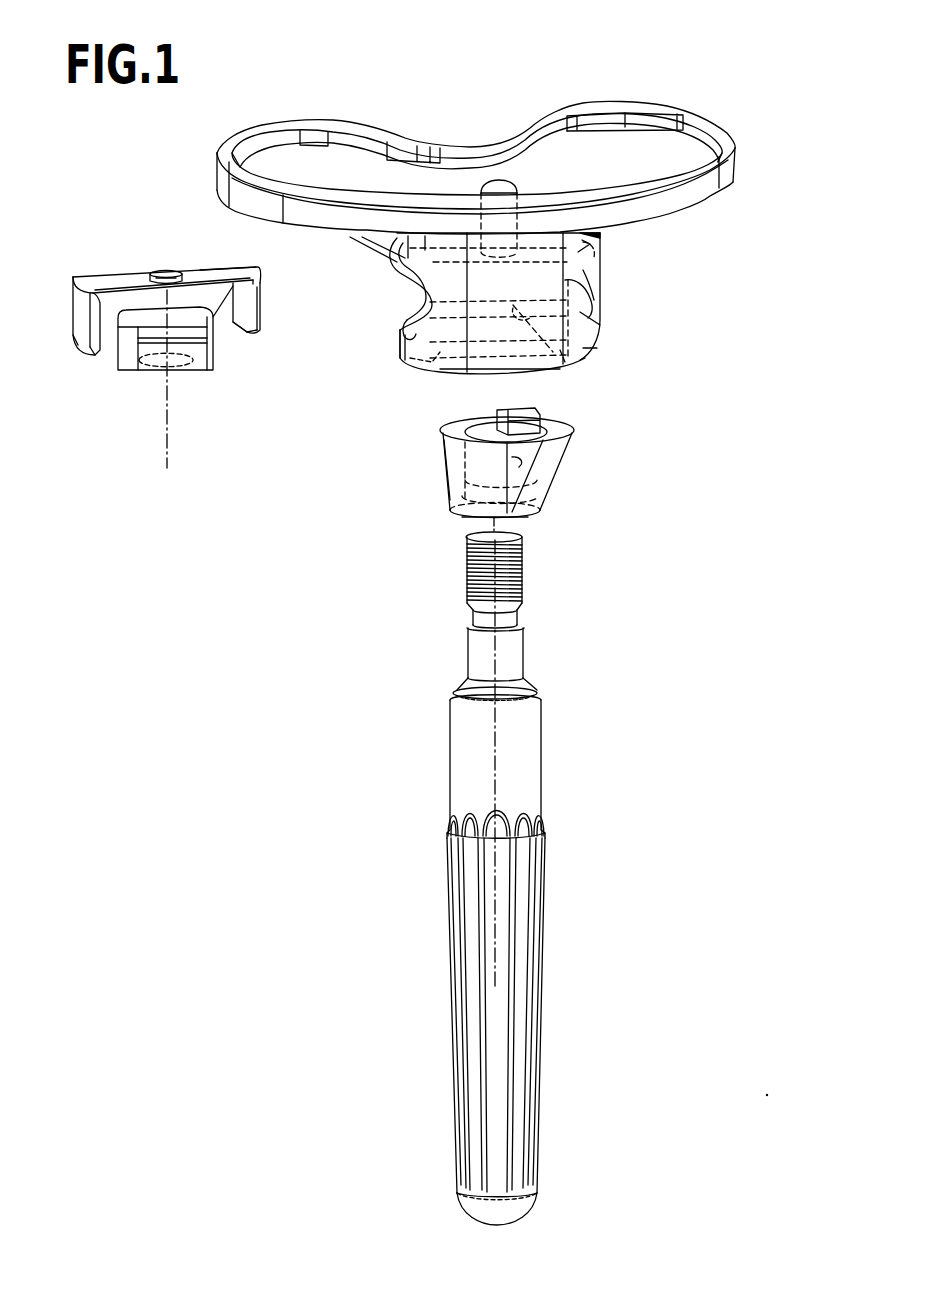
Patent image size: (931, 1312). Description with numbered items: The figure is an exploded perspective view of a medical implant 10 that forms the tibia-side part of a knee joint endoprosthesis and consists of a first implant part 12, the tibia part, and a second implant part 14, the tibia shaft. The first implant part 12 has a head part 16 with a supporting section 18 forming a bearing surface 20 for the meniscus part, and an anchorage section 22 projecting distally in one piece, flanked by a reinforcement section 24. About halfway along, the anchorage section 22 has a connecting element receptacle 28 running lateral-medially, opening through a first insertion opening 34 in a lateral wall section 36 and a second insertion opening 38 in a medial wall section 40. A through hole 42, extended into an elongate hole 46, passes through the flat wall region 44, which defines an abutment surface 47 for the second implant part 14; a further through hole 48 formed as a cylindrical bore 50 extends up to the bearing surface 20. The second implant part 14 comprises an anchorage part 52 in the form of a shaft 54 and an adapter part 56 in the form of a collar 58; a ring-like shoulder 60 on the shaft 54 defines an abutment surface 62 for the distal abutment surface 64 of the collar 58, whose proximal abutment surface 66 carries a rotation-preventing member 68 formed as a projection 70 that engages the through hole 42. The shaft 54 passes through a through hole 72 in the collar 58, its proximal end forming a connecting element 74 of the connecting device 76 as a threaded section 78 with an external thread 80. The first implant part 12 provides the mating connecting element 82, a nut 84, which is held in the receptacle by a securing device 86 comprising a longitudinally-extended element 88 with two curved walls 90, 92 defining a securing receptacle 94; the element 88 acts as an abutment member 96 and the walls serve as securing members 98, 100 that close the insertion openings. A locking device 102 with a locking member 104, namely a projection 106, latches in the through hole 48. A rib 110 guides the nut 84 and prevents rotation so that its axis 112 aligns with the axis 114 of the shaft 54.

The implant 10 is at (728, 64).
The first implant part 12 is at (742, 100).
The second implant part 14 is at (420, 1033).
The head part 16 is at (705, 190).
The supporting section 18 is at (592, 132).
The bearing surface 20 is at (644, 132).
The anchorage section 22 is at (598, 338).
The reinforcement section 24 is at (385, 246).
The connecting element receptacle 28 is at (416, 282).
The first insertion opening 34 is at (420, 297).
The lateral wall section 36 is at (406, 342).
The second insertion opening 38 is at (600, 262).
The medial wall section 40 is at (598, 318).
The through hole 42 is at (563, 370).
The wall region 44 is at (597, 355).
The elongate hole 46 is at (412, 364).
The abutment surface 47 is at (490, 371).
The through hole 48 is at (492, 181).
The cylindrical bore 50 is at (505, 172).
The anchorage part 52 is at (537, 1128).
The shaft 54 is at (537, 1075).
The adapter part 56 is at (447, 480).
The collar 58 is at (445, 452).
The ring-like shoulder 60 is at (565, 695).
The abutment surface 62 is at (453, 698).
The distal abutment surface 64 is at (447, 513).
The abutment surface 66 is at (446, 423).
The rotation-preventing member 68 is at (546, 412).
The projection 70 is at (550, 426).
The through hole 72 is at (548, 468).
The connecting element 74 is at (524, 590).
The connecting device 76 is at (154, 383).
The threaded section 78 is at (524, 550).
The thread 80 is at (466, 558).
The connecting element 82 is at (132, 360).
The nut 84 is at (120, 358).
The securing device 86 is at (273, 284).
The longitudinally-extended element 88 is at (120, 278).
The curved wall 90 is at (77, 334).
The curved wall 92 is at (262, 318).
The securing receptacle 94 is at (226, 338).
The abutment member 96 is at (238, 272).
The securing member 98 is at (95, 342).
The securing member 100 is at (262, 333).
The locking device 102 is at (154, 264).
The locking member 104 is at (173, 270).
The projection 106 is at (178, 275).
The rib 110 is at (197, 352).
The axis 112 is at (176, 438).
The axis 114 is at (500, 746).